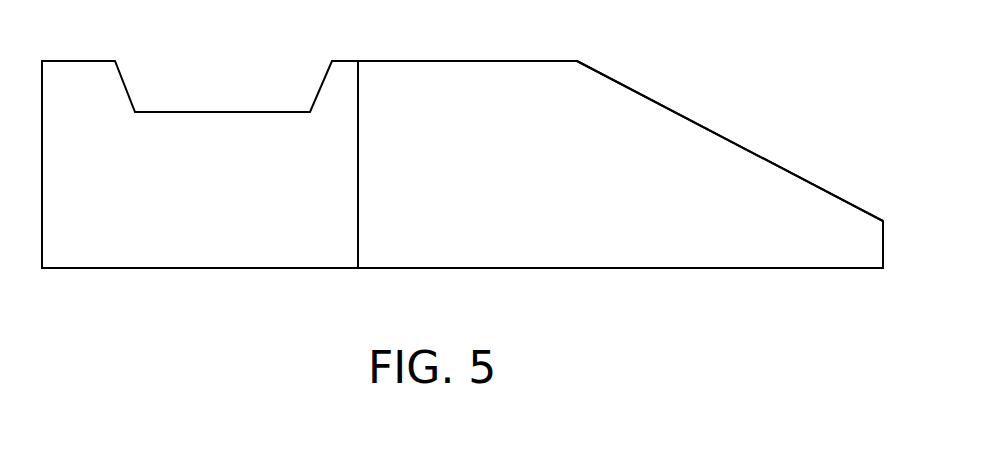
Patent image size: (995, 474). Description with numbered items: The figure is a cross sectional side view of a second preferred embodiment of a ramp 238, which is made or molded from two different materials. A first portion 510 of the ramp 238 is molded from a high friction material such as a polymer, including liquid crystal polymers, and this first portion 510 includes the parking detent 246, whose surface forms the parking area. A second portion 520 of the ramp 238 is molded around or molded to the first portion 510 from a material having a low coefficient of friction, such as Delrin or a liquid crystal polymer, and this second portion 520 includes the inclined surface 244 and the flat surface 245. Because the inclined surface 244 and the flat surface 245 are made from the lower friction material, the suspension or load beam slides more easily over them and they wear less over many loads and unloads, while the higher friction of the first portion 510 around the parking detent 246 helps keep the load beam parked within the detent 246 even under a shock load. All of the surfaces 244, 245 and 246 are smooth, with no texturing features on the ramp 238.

The first portion 510 is at (218, 253).
The ramp 238 is at (743, 258).
The parking detent 246 is at (223, 111).
The flat surface 245 is at (455, 59).
The inclined surface 244 is at (732, 141).
The second portion 520 is at (822, 210).